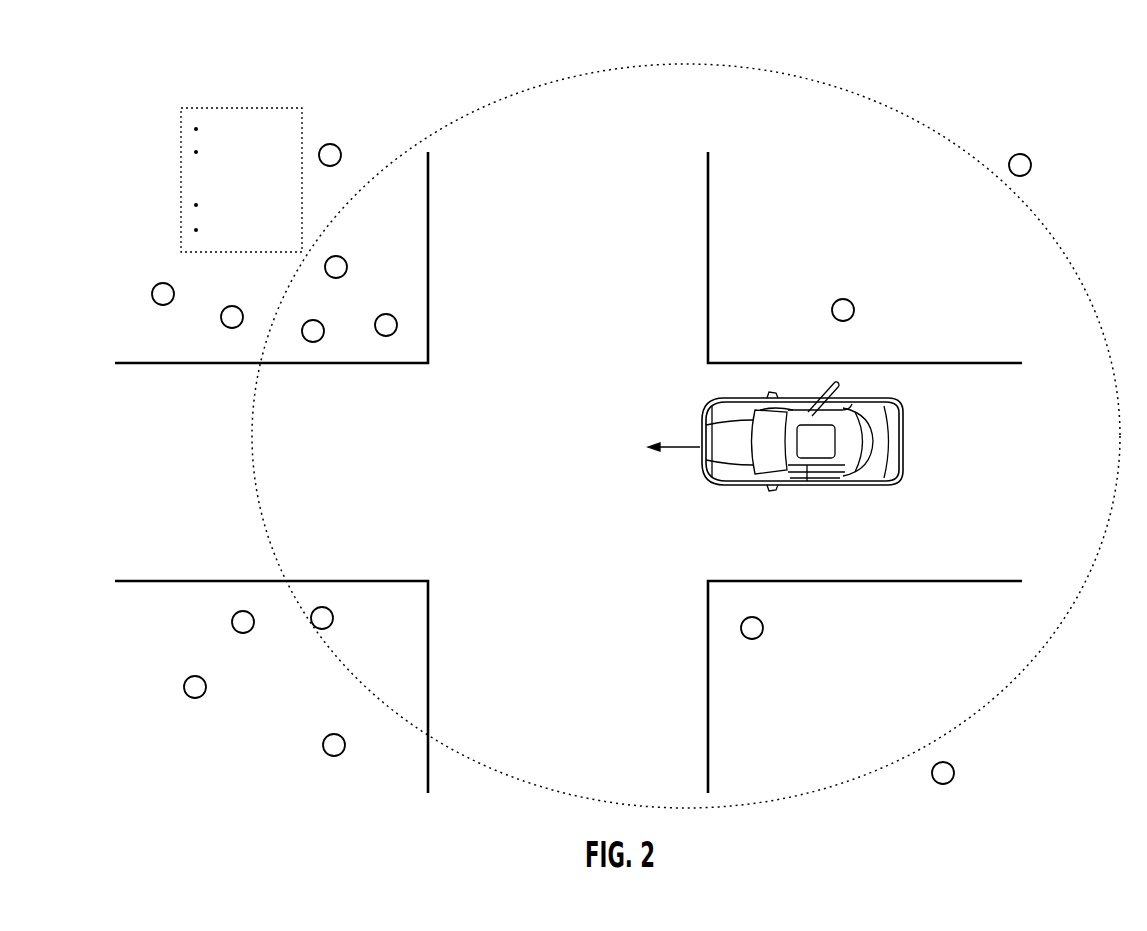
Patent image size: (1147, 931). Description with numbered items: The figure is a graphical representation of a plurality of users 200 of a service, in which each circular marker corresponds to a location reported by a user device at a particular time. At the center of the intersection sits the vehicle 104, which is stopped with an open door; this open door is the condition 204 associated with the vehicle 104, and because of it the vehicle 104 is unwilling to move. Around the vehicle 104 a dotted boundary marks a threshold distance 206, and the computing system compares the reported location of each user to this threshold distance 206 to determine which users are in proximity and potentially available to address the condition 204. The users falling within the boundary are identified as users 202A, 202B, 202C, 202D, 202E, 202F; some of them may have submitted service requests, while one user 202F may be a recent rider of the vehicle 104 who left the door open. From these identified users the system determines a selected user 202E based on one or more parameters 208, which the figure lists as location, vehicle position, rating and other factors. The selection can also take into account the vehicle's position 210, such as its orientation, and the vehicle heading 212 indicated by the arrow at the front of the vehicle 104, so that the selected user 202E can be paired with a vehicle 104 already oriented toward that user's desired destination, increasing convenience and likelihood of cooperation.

The plurality of users 200 is at (386, 112).
The vehicle 104 is at (904, 440).
The user 202A is at (763, 627).
The user 202B is at (334, 617).
The user 202C is at (325, 327).
The user 202D is at (397, 323).
The selected user 202E is at (346, 262).
The user 202F is at (855, 308).
The condition 204 is at (808, 381).
The threshold distance 206 is at (1000, 697).
The parameters 208 is at (182, 176).
The vehicle position 210 is at (817, 496).
The vehicle heading 212 is at (680, 447).